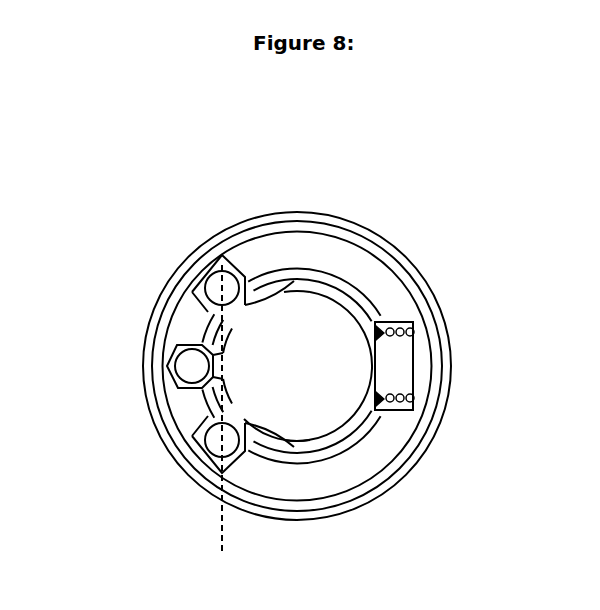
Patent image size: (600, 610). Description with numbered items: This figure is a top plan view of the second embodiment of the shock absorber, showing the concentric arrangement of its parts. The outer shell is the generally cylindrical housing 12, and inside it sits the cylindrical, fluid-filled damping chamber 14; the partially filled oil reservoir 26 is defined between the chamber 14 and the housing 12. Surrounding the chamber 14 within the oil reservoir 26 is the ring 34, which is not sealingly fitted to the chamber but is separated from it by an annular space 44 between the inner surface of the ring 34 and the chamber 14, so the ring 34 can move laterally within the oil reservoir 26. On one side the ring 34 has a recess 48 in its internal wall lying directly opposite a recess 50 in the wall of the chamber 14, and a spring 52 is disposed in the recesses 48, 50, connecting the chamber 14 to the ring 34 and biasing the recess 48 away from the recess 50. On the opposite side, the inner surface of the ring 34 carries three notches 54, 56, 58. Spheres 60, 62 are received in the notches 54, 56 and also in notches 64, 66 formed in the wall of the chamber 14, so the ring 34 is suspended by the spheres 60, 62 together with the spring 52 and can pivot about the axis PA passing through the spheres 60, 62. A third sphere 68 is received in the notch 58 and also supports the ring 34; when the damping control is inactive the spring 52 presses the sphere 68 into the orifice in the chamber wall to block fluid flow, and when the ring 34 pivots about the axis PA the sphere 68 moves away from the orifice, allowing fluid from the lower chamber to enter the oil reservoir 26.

The housing 12 is at (398, 250).
The damping chamber 14 is at (352, 428).
The oil reservoir 26 is at (427, 312).
The ring 34 is at (262, 246).
The annular space 44 is at (373, 307).
The recess 48 is at (405, 365).
The recess 50 is at (378, 372).
The spring 52 is at (412, 330).
The notch 54 is at (245, 257).
The notch 56 is at (205, 427).
The notch 58 is at (197, 353).
The sphere 60 is at (207, 285).
The sphere 62 is at (212, 440).
The notch 64 is at (297, 291).
The notch 66 is at (297, 441).
The sphere 68 is at (190, 364).
The pivot axis PA is at (218, 425).